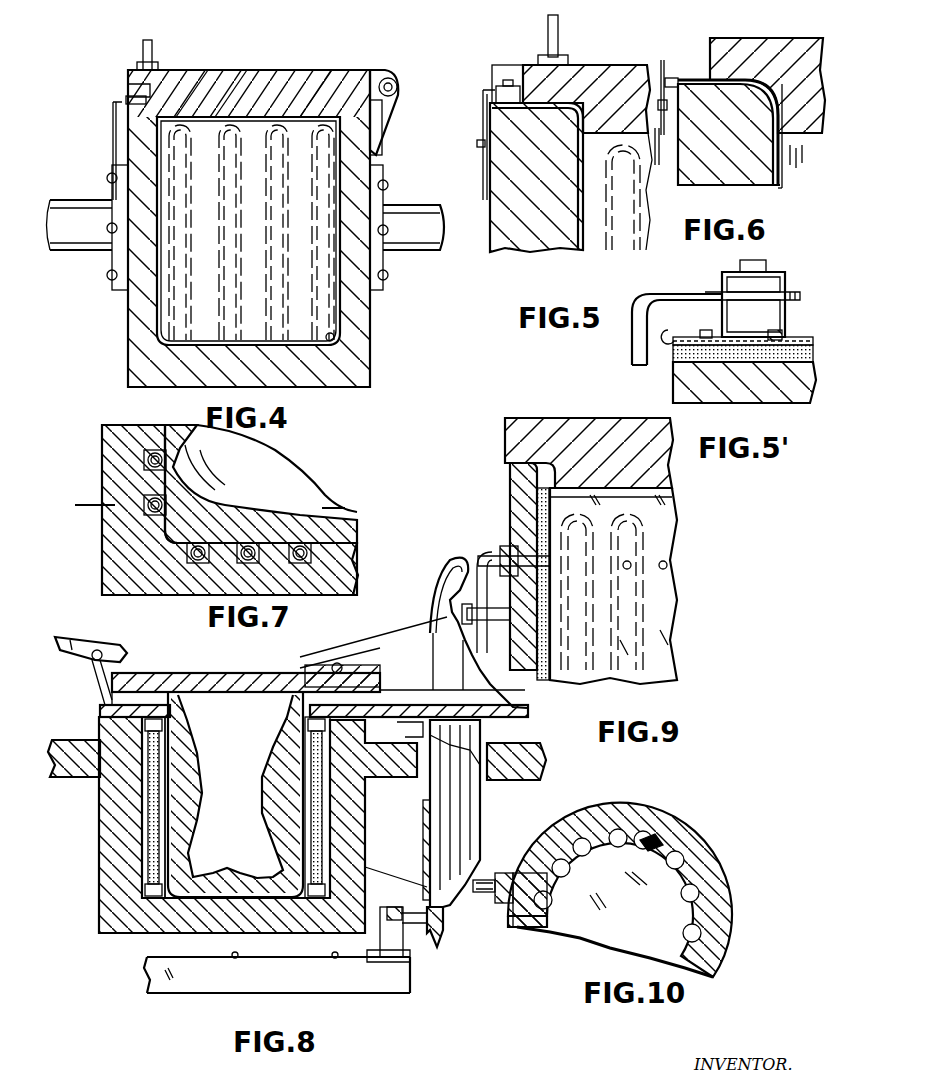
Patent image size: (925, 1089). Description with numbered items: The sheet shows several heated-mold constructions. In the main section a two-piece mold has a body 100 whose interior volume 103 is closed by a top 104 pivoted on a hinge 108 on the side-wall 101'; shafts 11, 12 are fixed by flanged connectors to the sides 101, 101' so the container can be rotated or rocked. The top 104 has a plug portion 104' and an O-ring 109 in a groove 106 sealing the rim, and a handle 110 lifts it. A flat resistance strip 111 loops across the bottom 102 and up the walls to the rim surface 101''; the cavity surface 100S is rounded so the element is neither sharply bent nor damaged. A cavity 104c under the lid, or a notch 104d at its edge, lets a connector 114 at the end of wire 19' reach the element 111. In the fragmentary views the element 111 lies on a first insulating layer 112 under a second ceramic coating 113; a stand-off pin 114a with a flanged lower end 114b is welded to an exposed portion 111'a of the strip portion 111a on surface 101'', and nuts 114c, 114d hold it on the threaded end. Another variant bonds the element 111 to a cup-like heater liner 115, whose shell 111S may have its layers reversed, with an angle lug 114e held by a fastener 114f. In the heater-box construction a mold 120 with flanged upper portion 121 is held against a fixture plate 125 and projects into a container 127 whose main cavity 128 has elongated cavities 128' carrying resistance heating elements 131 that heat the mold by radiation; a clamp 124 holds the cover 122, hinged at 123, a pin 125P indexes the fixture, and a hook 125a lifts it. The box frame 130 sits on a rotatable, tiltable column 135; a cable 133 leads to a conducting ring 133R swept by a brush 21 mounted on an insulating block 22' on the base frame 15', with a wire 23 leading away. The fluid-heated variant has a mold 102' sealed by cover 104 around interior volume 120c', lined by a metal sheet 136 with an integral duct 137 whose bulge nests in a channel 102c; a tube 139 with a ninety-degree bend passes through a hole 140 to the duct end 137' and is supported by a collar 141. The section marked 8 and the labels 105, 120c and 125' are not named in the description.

In FIG. 4, the shaft 11 is at (72, 240).
In FIG. 4, the shaft 12 is at (405, 215).
In FIG. 8, the base or frame 15' is at (297, 994).
In FIG. 4, the wire 19' is at (96, 150).
In FIG. 5, the wire 19' is at (470, 145).
In FIG. 6, the wire 19' is at (664, 159).
In FIG. 5', the wire 19' is at (698, 331).
In FIG. 8, the electrical brush 21 is at (396, 926).
In FIG. 8, the insulating block 22' is at (408, 966).
In FIG. 8, the wire 23 is at (277, 965).
In FIG. 7, the section line 8 is at (206, 508).
In FIG. 5, the wall or body 100 is at (527, 252).
In FIG. 6, the wall or body 100 is at (690, 188).
In FIG. 5', the wall or body 100 is at (700, 396).
In FIG. 4, the interior surface 100S is at (345, 343).
In FIG. 5, the interior surface 100S is at (580, 250).
In FIG. 6, the interior surface 100S is at (779, 190).
In FIG. 4, the side 101 is at (120, 231).
In FIG. 4, the side-wall 101' is at (381, 231).
In FIG. 5', the upper surface of rim 101'' is at (724, 369).
In FIG. 4, the bottom 102 is at (263, 247).
In FIG. 9, the mold 102' is at (498, 565).
In FIG. 10, the mold 102' is at (632, 890).
In FIG. 9, the groove or channel 102c is at (542, 530).
In FIG. 10, the groove or channel 102c is at (660, 840).
In FIG. 4, the interior volume 103 is at (175, 333).
In FIG. 5, the interior volume 103 is at (645, 235).
In FIG. 6, the interior volume 103 is at (823, 183).
In FIG. 4, the lid or top 104 is at (249, 76).
In FIG. 5, the lid or top 104 is at (586, 81).
In FIG. 9, the lid or top 104 is at (589, 441).
In FIG. 4, the plug portion 104' is at (325, 79).
In FIG. 4, the cavity or indentation 104c is at (140, 90).
In FIG. 5, the notch 104d is at (516, 68).
In FIG. 4, the insulation layer 105 is at (207, 115).
In FIG. 4, the groove 106 is at (176, 112).
In FIG. 4, the hinge 108 is at (400, 85).
In FIG. 4, the O-ring 109 is at (340, 100).
In FIG. 4, the handle 110 is at (145, 45).
In FIG. 5, the handle 110 is at (558, 26).
In FIG. 4, the resistance heating element 111 is at (295, 232).
In FIG. 5, the resistance heating element 111 is at (645, 207).
In FIG. 6, the resistance heating element 111 is at (733, 97).
In FIG. 6, the shell 111S is at (782, 186).
In FIG. 5', the conducting strip portion 111a is at (684, 327).
In FIG. 5', the exposed portion 111'a is at (771, 384).
In FIG. 6, the first insulating layer 112 is at (713, 72).
In FIG. 6, the second coating 113 is at (780, 70).
In FIG. 4, the electrical connector 114 is at (132, 93).
In FIG. 5, the electrical connector 114 is at (503, 86).
In FIG. 5', the electrical stand-off pin 114a is at (768, 263).
In FIG. 5', the flanged lower end 114b is at (778, 336).
In FIG. 5', the nut 114c is at (772, 289).
In FIG. 5', the nut 114d is at (772, 322).
In FIG. 6, the lug 114e is at (672, 82).
In FIG. 6, the fastener 114f is at (662, 95).
In FIG. 6, the heater liner 115 is at (766, 188).
In FIG. 7, the mold 120 is at (314, 478).
In FIG. 8, the mold 120 is at (178, 802).
In FIG. 7, the mold core 120c is at (271, 468).
In FIG. 9, the interior volume 120c' is at (677, 582).
In FIG. 8, the flanged upper portion 121 is at (160, 690).
In FIG. 8, the mold cover 122 is at (200, 678).
In FIG. 8, the hinge 123 is at (335, 663).
In FIG. 8, the clamp 124 is at (125, 655).
In FIG. 8, the frame or plate 125 is at (432, 724).
In FIG. 8, the plate 125' is at (114, 701).
In FIG. 8, the pin 125P is at (100, 780).
In FIG. 9, the hook 125a is at (440, 580).
In FIG. 8, the container 127 is at (100, 905).
In FIG. 8, the main cavity 128 is at (220, 827).
In FIG. 8, the elongated cavity 128' is at (108, 807).
In FIG. 8, the heater box frame 130 is at (528, 780).
In FIG. 7, the resistance heating element 131 is at (145, 460).
In FIG. 8, the resistance heating element 131 is at (150, 845).
In FIG. 8, the cable 133 is at (423, 850).
In FIG. 8, the conducting ring 133R is at (443, 935).
In FIG. 8, the column 135 is at (472, 840).
In FIG. 9, the sheet of metal 136 is at (680, 621).
In FIG. 10, the sheet of metal 136 is at (700, 910).
In FIG. 9, the duct 137 is at (651, 609).
In FIG. 10, the duct 137 is at (656, 885).
In FIG. 9, the end portion of duct 137' is at (569, 609).
In FIG. 9, the tube 139 is at (510, 546).
In FIG. 10, the tube 139 is at (520, 910).
In FIG. 9, the hole 140 is at (505, 543).
In FIG. 9, the fitting or collar 141 is at (491, 602).